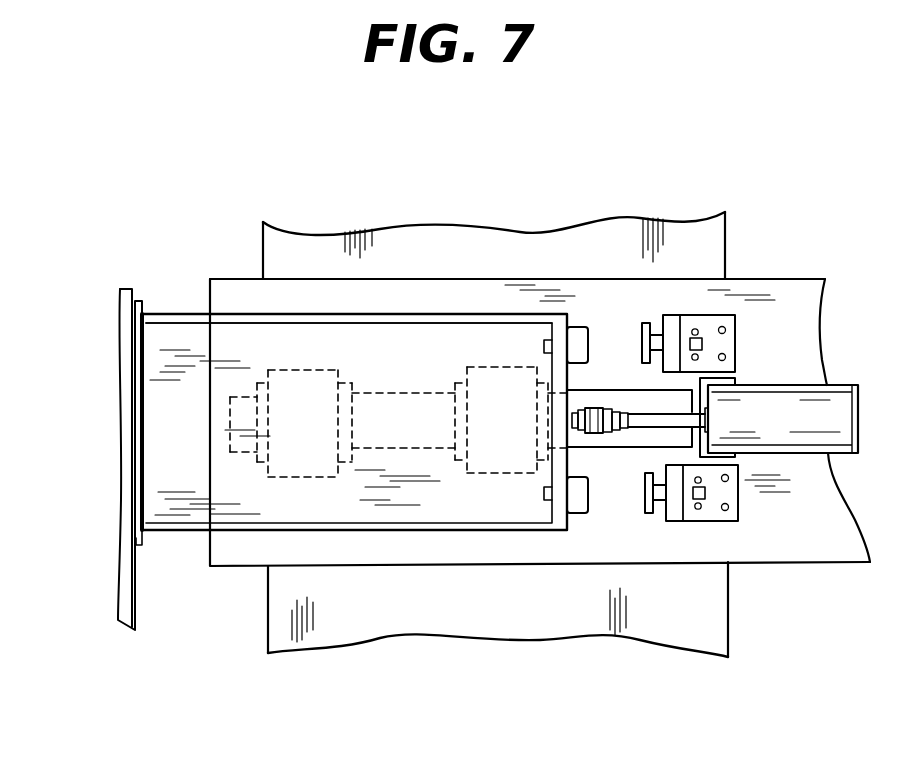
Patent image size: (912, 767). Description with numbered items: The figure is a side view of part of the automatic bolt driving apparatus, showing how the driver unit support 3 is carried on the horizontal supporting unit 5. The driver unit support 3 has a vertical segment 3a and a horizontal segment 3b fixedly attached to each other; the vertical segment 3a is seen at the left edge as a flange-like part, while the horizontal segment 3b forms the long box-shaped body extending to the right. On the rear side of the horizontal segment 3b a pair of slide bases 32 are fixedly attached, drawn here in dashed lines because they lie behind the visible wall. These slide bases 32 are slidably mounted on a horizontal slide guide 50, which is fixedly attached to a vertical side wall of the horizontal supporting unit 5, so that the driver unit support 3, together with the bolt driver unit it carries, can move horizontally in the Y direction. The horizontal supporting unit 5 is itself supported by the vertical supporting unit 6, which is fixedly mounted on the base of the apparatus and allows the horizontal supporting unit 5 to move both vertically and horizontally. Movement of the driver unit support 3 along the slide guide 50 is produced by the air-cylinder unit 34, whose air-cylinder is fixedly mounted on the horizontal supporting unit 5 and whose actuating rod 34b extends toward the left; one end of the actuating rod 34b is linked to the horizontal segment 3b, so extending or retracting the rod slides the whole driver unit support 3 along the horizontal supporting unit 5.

The driver unit support 3 is at (197, 533).
The vertical segment 3a is at (120, 410).
The horizontal segment 3b is at (235, 350).
The slide bases 32 is at (310, 388).
The horizontal slide guide 50 is at (413, 413).
The air-cylinder unit 34 is at (773, 383).
The actuating rod 34b is at (650, 418).
The horizontal supporting unit 5 is at (800, 558).
The vertical supporting unit 6 is at (467, 641).